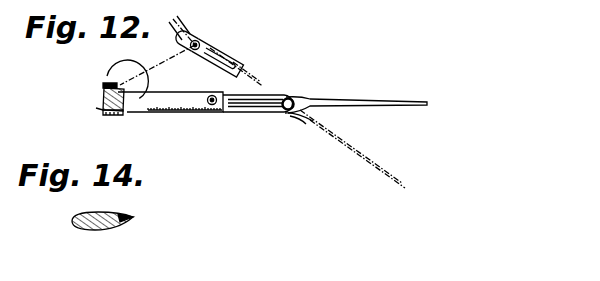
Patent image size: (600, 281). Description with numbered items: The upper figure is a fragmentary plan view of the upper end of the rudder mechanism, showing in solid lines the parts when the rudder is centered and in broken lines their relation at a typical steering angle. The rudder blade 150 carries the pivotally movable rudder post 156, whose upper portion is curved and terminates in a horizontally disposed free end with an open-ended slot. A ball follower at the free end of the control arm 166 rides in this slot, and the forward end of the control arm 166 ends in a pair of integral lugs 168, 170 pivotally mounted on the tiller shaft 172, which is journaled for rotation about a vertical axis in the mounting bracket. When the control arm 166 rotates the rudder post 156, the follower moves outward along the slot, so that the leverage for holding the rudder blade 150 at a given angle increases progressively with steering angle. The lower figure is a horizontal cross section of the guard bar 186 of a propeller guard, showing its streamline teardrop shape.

In FIG. 12, the rudder blade 150 is at (377, 90).
In FIG. 12, the rudder post 156 is at (254, 110).
In FIG. 12, the control arm 166 is at (128, 67).
In FIG. 12, the lug 168 is at (110, 116).
In FIG. 12, the lug 170 is at (103, 88).
In FIG. 12, the tiller shaft 172 is at (103, 111).
In FIG. 14, the guard bar 186 is at (107, 228).